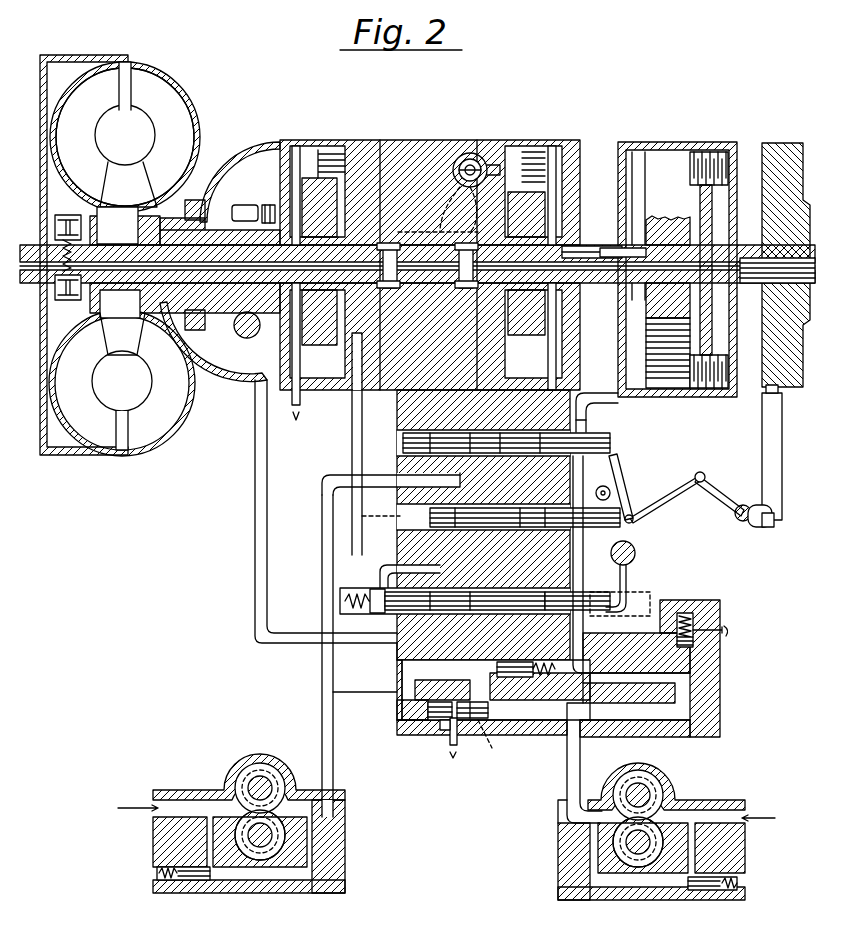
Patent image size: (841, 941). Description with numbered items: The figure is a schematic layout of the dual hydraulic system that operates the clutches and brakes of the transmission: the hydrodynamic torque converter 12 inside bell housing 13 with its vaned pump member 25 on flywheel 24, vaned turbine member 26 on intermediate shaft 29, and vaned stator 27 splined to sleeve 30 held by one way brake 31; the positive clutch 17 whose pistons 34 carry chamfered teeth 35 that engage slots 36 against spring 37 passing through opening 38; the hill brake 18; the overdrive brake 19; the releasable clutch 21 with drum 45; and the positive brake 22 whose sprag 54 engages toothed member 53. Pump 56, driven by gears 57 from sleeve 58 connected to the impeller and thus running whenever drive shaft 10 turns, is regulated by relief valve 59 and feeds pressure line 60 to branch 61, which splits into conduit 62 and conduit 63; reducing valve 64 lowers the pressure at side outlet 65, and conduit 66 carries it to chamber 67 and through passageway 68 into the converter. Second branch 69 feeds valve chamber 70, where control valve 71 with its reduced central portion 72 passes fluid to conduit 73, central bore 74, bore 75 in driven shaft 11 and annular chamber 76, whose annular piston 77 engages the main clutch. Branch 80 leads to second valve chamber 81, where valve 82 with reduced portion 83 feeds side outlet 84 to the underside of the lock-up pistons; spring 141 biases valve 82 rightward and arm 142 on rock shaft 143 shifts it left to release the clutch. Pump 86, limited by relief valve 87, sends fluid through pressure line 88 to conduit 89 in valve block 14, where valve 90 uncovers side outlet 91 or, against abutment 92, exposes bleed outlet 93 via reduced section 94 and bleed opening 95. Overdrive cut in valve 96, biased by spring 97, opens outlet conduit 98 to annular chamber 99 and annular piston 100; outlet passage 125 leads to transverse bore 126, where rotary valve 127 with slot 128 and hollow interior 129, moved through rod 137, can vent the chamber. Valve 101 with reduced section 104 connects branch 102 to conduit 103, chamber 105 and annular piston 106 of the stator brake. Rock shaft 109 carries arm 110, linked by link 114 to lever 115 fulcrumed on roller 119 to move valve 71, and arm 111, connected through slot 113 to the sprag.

The drive shaft 10 is at (33, 238).
The driven shaft 11 is at (728, 260).
The hydrodynamic torque converter 12 is at (167, 94).
The bell housing 13 is at (196, 110).
The valve block 14 is at (410, 132).
The positive clutch 17 is at (100, 228).
The hill brake 18 is at (299, 140).
The brake 19 is at (557, 142).
The releasable clutch 21 is at (718, 142).
The positive brake 22 is at (778, 150).
The flywheel 24 is at (50, 120).
The vaned pump member 25 is at (150, 72).
The vaned turbine member 26 is at (110, 75).
The vaned stator 27 is at (123, 170).
The intermediate shaft 29 is at (432, 265).
The sleeve 30 is at (172, 224).
The one way brake 31 is at (267, 203).
The pistons 34 is at (122, 381).
The chamfered teeth 35 is at (75, 300).
The slots 36 is at (63, 307).
The spring 37 is at (90, 272).
The opening 38 is at (40, 277).
The drum 45 is at (688, 140).
The toothed member 53 is at (780, 382).
The sprag 54 is at (768, 434).
The pump 56 is at (243, 750).
The gears 57 is at (220, 377).
The sleeve 58 is at (213, 190).
The relief valve 59 is at (192, 882).
The pressure line 60 is at (320, 722).
The branch 61 is at (363, 692).
The conduit 62 is at (496, 689).
The conduit 63 is at (417, 733).
The reducing valve 64 is at (515, 722).
The side outlet 65 is at (233, 228).
The conduit 66 is at (256, 500).
The chamber 67 is at (248, 353).
The passageway 68 is at (222, 318).
The second branch 69 is at (342, 477).
The valve chamber 70 is at (590, 423).
The control valve 71 is at (616, 448).
The central portion 72 is at (590, 411).
The conduit 73 is at (576, 398).
The central bore 74 is at (556, 262).
The bore 75 is at (609, 262).
The annular chamber 76 is at (637, 153).
The annular piston 77 is at (665, 153).
The branch 80 is at (562, 624).
The second valve chamber 81 is at (395, 614).
The valve 82 is at (594, 596).
The portion of reduced cross section 83 is at (383, 585).
The side outlet 84 is at (380, 526).
The pump 86 is at (690, 790).
The relief valve 87 is at (708, 890).
The pressure line 88 is at (578, 752).
The conduit 89 is at (628, 712).
The valve 90 is at (424, 742).
The side outlet 91 is at (478, 727).
The abutment 92 is at (523, 716).
The bleed outlet 93 is at (460, 748).
The section of reduced diameter 94 is at (443, 745).
The bleed opening 95 is at (490, 749).
The overdrive cut in valve 96 is at (694, 657).
The spring 97 is at (685, 600).
The outlet conduit 98 is at (677, 693).
The annular chamber 99 is at (511, 137).
The annular piston 100 is at (529, 150).
The valve 101 is at (587, 527).
The branch 102 is at (465, 497).
The conduit 103 is at (353, 413).
The section of reduced cross section 104 is at (568, 544).
The chamber 105 is at (346, 143).
The annular piston 106 is at (328, 148).
The rock shaft 109 is at (758, 528).
The arm 110 is at (723, 490).
The arm 111 is at (762, 519).
The slot 113 is at (768, 538).
The link 114 is at (697, 474).
The lever 115 is at (618, 470).
The roller 119 is at (619, 486).
The outlet passage 125 is at (490, 160).
The transverse bore 126 is at (462, 152).
The valve 127 is at (456, 156).
The slot 128 is at (452, 170).
The hollow interior 129 is at (466, 173).
The rod 137 is at (414, 224).
The spring 141 is at (333, 603).
The arm 142 is at (628, 573).
The rock shaft 143 is at (634, 553).